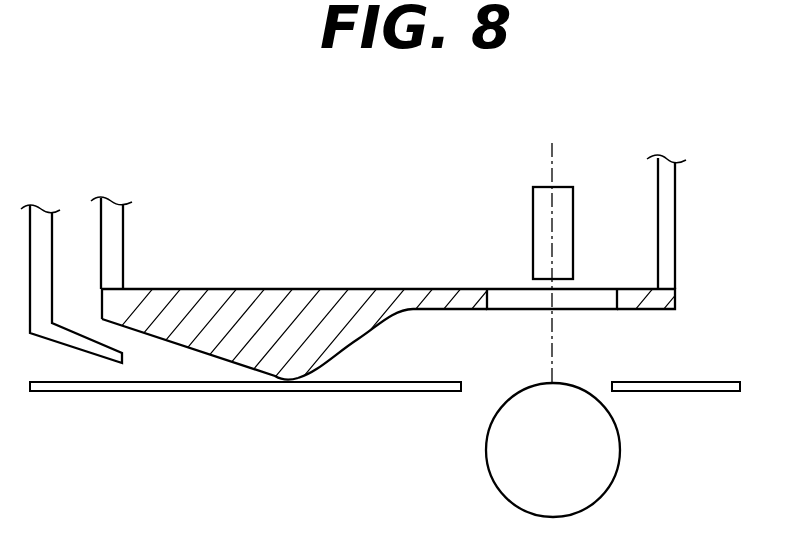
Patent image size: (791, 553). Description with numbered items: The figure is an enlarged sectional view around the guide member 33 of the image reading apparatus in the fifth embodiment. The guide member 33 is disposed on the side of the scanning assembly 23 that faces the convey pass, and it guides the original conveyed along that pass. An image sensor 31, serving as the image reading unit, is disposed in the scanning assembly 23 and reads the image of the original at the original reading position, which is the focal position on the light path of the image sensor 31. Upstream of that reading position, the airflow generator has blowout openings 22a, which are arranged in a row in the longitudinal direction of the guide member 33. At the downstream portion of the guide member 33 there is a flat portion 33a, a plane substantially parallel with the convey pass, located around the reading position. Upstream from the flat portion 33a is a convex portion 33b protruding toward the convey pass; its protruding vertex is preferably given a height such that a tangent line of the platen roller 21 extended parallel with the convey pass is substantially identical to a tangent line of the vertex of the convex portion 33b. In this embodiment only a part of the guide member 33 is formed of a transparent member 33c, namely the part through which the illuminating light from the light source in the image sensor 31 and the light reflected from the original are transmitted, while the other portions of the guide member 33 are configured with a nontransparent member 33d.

The platen roller 21 is at (615, 472).
The blowout openings 22a is at (125, 338).
The scanning assembly 23 is at (675, 217).
The image sensor 31 is at (573, 238).
The guide member 33 is at (404, 334).
The flat portion 33a is at (440, 303).
The convex portion 33b is at (288, 367).
The transparent member 33c is at (575, 300).
The nontransparent member 33d is at (372, 330).